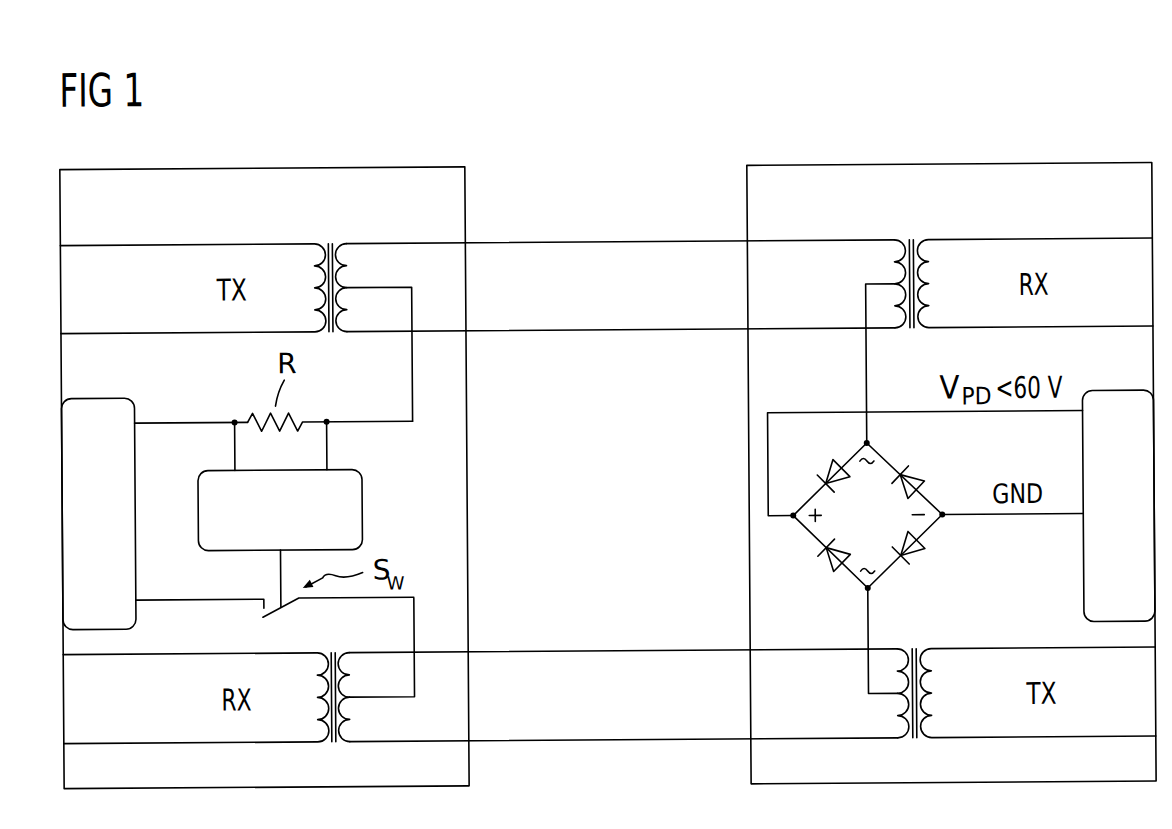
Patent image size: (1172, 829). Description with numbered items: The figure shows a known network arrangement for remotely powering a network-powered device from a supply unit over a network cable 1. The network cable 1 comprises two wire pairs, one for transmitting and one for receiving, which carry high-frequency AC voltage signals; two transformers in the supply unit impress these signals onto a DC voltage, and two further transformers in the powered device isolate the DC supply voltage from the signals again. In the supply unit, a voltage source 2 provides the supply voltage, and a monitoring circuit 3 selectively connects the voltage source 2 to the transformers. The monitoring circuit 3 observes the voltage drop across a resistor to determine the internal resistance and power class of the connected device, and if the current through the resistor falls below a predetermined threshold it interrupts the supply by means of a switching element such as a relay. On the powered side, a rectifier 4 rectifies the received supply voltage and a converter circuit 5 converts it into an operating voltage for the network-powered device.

The network cable 1 is at (650, 156).
The voltage source 2 is at (135, 446).
The monitoring circuit 3 is at (360, 510).
The rectifier 4 is at (950, 559).
The converter circuit 5 is at (1092, 452).